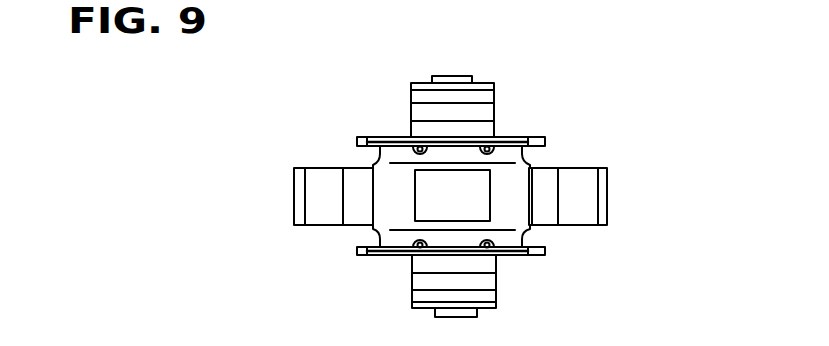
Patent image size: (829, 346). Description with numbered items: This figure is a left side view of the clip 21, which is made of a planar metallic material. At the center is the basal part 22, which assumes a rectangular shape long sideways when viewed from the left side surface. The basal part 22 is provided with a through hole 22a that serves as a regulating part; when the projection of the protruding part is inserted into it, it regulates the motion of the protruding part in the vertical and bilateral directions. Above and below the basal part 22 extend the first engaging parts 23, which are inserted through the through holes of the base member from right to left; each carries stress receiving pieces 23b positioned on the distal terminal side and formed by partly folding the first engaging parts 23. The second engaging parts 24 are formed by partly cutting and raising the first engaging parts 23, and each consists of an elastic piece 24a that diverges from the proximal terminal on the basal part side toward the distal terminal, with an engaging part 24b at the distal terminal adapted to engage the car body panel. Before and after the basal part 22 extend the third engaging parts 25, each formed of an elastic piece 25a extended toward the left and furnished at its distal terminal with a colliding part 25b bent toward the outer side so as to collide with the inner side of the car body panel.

The clip 21 is at (606, 152).
The basal part 22 is at (398, 178).
The through hole 22a is at (430, 198).
The first engaging parts 23 is at (397, 137).
The stress receiving pieces 23b is at (432, 126).
The second engaging parts 24 is at (600, 55).
The elastic piece 24a is at (493, 118).
The engaging part 24b is at (493, 95).
The third engaging parts 25 is at (207, 135).
The elastic piece 25a is at (343, 188).
The colliding part 25b is at (300, 208).